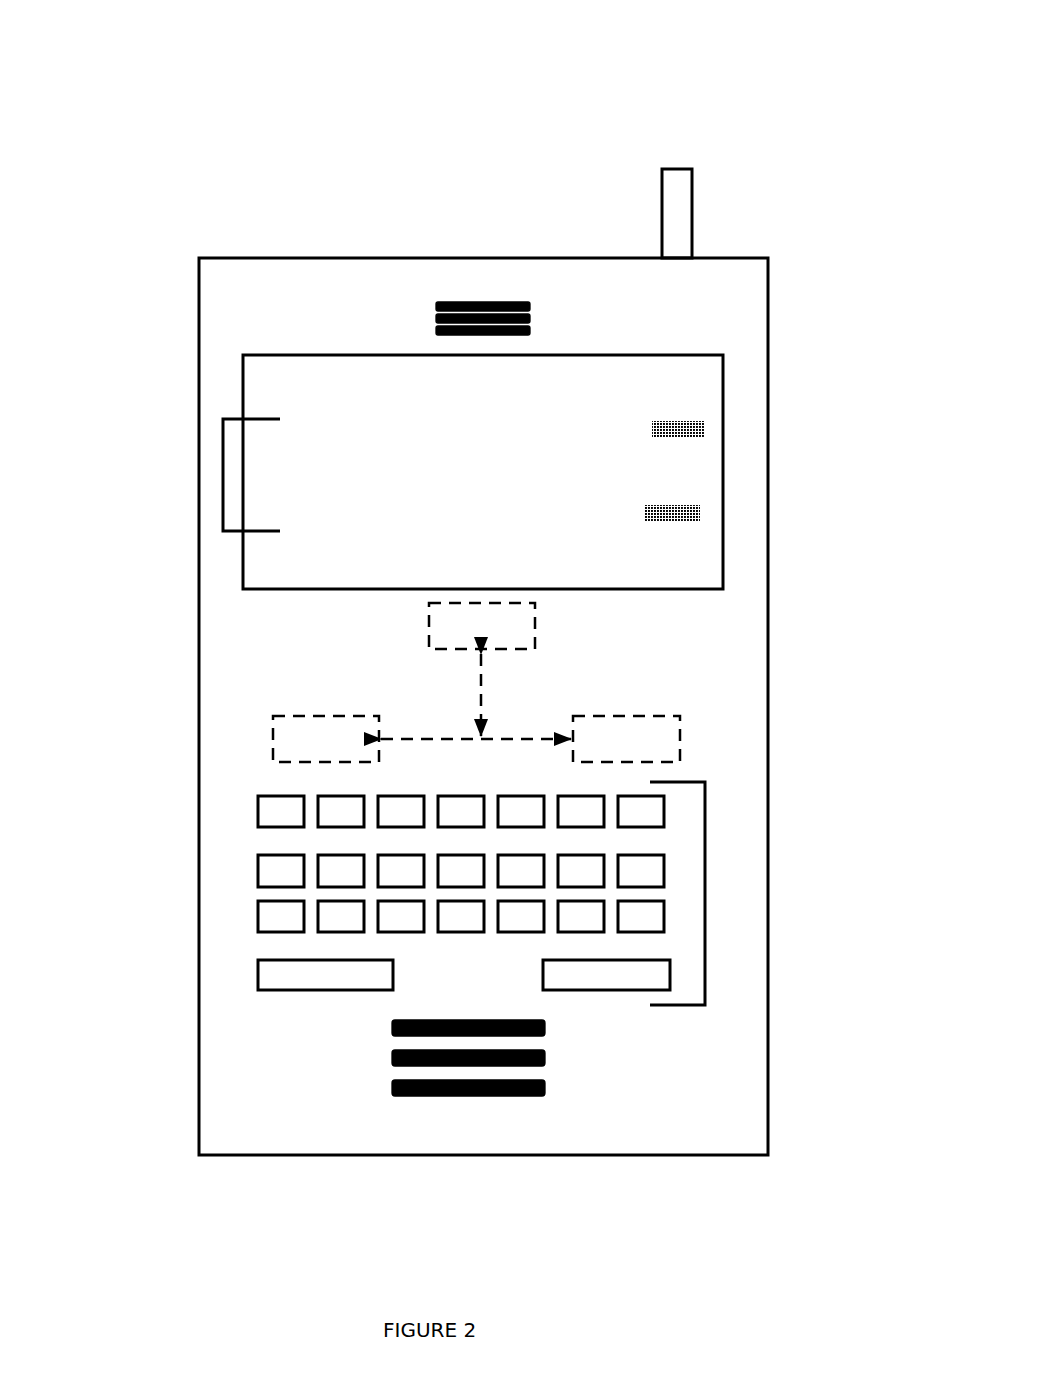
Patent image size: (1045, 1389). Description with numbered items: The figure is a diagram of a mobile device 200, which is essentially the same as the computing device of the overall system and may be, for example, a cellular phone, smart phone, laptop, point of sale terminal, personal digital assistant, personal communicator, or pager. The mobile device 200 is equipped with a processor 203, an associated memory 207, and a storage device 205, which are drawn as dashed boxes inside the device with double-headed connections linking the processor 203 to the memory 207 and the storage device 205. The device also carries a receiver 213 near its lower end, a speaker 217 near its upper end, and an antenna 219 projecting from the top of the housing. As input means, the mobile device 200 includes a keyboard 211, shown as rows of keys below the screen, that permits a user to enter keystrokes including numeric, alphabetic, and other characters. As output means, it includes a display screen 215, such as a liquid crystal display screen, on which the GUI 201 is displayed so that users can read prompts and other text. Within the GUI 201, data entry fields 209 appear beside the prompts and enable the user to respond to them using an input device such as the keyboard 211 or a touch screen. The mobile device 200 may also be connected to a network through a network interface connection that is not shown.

The mobile device 200 is at (556, 106).
The GUI 201 is at (223, 487).
The processor 203 is at (427, 627).
The storage device 205 is at (271, 740).
The memory 207 is at (681, 738).
The data entry field 209 is at (711, 425).
The keyboard 211 is at (708, 894).
The receiver 213 is at (465, 1099).
The display screen 215 is at (684, 352).
The speaker 217 is at (483, 301).
The antenna 219 is at (694, 209).